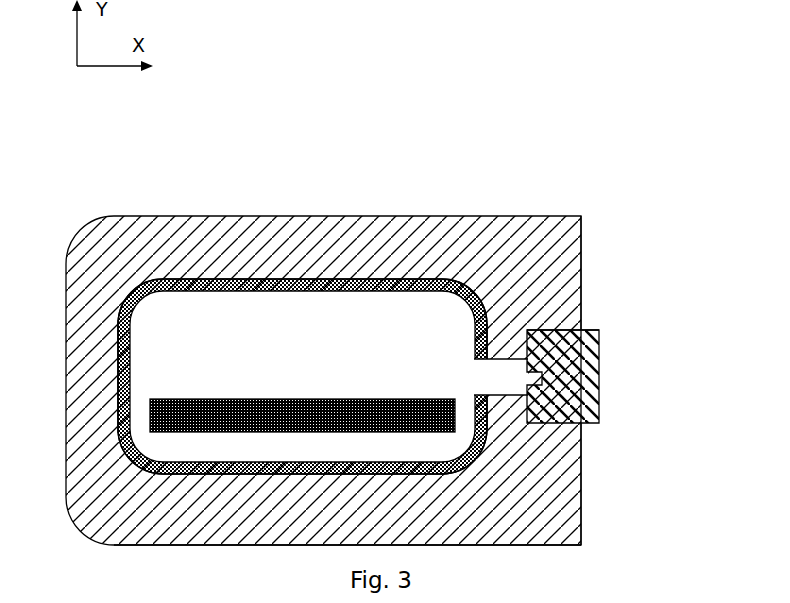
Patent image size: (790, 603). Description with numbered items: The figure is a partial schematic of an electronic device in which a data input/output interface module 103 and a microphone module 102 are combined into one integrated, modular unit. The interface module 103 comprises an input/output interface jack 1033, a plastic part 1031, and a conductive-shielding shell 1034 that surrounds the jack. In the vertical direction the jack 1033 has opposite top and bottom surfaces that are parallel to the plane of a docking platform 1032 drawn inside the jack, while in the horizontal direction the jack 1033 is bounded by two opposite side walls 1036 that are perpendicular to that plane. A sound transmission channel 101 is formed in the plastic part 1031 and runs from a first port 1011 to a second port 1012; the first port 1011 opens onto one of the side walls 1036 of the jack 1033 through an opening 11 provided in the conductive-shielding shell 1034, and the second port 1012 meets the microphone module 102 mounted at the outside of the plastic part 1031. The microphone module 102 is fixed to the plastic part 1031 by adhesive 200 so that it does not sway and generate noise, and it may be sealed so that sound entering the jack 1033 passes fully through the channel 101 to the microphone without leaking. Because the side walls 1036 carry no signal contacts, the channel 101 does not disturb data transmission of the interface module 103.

The sound transmission channel 101 is at (668, 157).
The first port 1011 is at (490, 327).
The second port 1012 is at (566, 328).
The microphone module 102 is at (581, 424).
The data input/output interface module 103 is at (509, 91).
The plastic part 1031 is at (355, 245).
The docking platform 1032 is at (279, 398).
The input/output interface jack 1033 is at (425, 330).
The conductive-shielding shell 1034 is at (298, 283).
The side walls 1036 is at (127, 303).
The opening 11 is at (483, 382).
The adhesive 200 is at (580, 329).